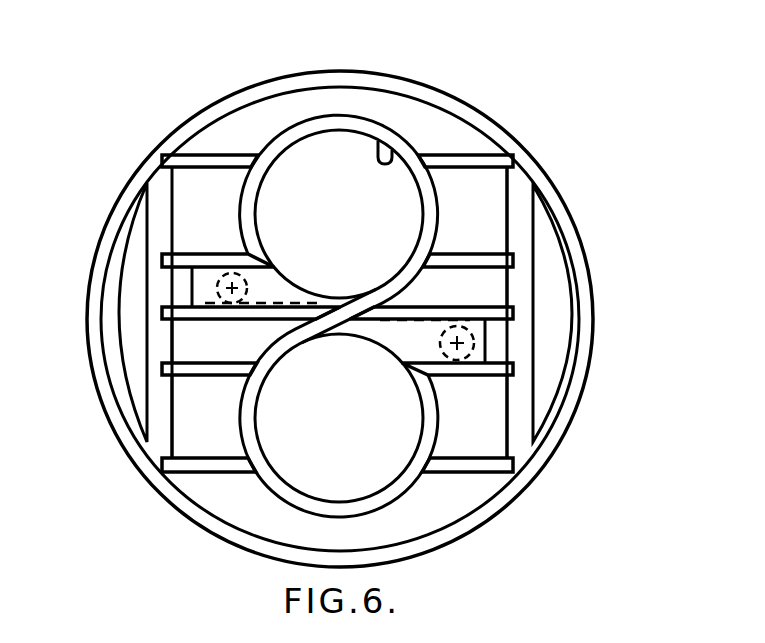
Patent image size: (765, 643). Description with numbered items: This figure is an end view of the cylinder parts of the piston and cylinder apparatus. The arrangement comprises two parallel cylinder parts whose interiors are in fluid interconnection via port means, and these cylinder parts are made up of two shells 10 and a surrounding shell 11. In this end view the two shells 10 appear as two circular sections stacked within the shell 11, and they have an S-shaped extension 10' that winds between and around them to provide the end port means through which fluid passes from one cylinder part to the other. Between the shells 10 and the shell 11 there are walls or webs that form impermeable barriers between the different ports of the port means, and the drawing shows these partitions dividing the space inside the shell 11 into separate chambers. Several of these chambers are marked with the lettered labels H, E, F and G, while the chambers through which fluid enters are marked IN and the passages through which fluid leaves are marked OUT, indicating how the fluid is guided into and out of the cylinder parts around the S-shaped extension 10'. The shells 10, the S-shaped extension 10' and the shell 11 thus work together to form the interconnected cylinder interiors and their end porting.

The shell 10 is at (367, 287).
The S-shaped extension 10' is at (338, 275).
The shell 11 is at (588, 276).
The tube position H is at (213, 288).
The tube position E is at (470, 345).
The chamber F is at (183, 335).
The chamber G is at (483, 287).
The inlet chambers IN is at (183, 420).
The outlet passages OUT is at (331, 104).